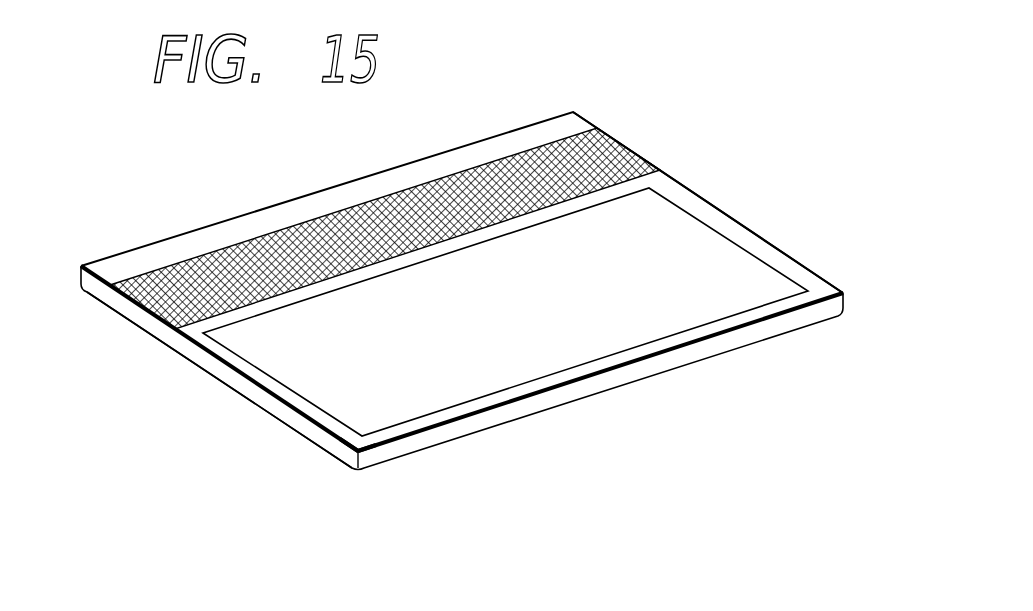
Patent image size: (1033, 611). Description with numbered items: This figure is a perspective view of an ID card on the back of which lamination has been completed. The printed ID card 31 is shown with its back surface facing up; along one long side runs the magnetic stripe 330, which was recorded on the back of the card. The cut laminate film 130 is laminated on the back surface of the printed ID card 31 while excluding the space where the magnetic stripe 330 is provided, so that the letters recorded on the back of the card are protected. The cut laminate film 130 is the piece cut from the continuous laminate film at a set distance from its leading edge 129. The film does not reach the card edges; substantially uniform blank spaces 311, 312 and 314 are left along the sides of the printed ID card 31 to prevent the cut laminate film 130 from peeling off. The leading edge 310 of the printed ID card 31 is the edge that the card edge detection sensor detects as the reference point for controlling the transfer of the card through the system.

The printed ID card 31 is at (745, 337).
The leading edge 129 is at (233, 372).
The cut laminate film 130 is at (670, 213).
The leading edge 310 is at (150, 332).
The blank space 311 is at (338, 427).
The blank space 312 is at (591, 381).
The blank space 314 is at (773, 246).
The magnetic stripe 330 is at (622, 142).